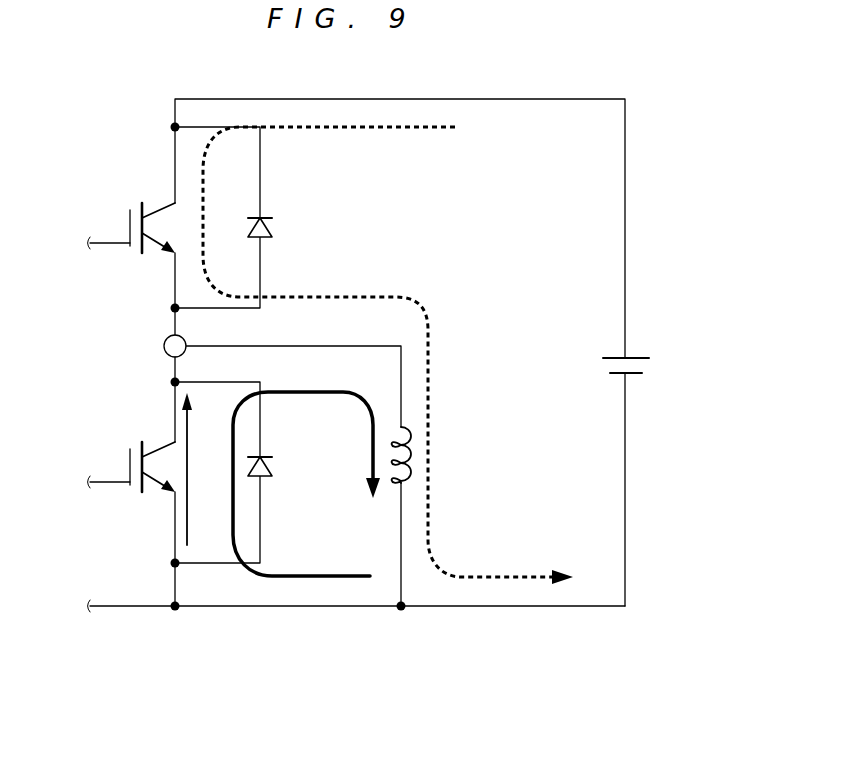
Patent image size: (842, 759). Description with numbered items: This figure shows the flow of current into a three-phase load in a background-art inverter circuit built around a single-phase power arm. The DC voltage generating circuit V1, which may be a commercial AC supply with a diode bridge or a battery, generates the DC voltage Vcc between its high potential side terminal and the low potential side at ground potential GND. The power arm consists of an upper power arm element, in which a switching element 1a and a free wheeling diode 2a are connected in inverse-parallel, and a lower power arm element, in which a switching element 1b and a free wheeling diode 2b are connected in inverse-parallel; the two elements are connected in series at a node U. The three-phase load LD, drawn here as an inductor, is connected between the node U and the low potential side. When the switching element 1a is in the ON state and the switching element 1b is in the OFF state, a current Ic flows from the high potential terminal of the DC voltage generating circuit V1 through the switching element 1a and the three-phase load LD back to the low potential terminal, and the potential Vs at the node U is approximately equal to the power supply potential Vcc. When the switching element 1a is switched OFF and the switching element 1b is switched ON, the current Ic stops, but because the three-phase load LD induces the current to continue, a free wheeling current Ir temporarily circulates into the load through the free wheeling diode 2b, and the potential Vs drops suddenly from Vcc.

The switching element 1a is at (137, 197).
The switching element 1b is at (137, 436).
The free wheeling diode 2a is at (280, 232).
The free wheeling diode 2b is at (273, 465).
The three-phase load LD is at (413, 457).
The DC voltage generating circuit V1 is at (645, 367).
The DC voltage Vcc is at (589, 341).
The node U is at (163, 346).
The ground potential GND is at (357, 592).
The potential at the node Vs is at (199, 469).
The free wheeling current Ir is at (333, 578).
The current Ic is at (502, 578).